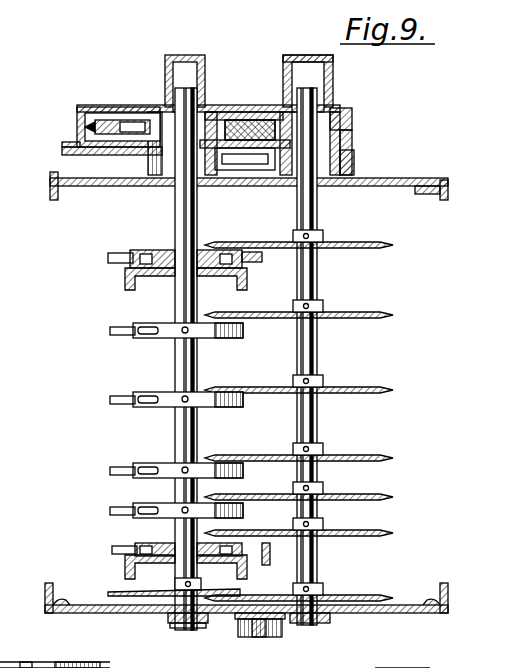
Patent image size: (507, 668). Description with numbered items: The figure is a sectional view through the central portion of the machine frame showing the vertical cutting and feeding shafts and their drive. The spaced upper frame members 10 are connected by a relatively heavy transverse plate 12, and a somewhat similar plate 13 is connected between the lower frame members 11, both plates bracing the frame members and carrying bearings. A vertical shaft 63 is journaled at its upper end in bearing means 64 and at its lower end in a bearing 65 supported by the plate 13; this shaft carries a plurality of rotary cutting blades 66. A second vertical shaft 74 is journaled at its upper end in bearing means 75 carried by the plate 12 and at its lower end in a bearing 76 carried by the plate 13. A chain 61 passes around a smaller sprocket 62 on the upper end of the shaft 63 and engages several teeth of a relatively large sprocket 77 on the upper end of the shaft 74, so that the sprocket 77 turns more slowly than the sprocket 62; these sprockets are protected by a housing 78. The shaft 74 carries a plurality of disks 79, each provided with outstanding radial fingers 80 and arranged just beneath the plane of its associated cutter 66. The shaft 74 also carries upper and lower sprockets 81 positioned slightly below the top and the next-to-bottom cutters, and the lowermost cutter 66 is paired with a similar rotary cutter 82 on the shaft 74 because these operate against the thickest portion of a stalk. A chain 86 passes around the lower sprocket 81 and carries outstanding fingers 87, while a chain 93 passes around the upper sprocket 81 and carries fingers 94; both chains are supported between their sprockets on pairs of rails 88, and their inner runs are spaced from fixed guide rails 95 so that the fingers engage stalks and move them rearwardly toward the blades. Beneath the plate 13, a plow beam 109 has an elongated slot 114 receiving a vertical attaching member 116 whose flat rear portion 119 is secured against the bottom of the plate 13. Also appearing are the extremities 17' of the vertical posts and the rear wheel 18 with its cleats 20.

The upper frame members 10 is at (54, 175).
The lower frame members 11 is at (45, 596).
The transverse plate 12 is at (405, 178).
The plate 13 is at (112, 614).
The extremities 17' is at (402, 658).
The wheel 18 is at (55, 654).
The cleats 20 is at (34, 662).
The chain 61 is at (343, 106).
The sprocket 62 is at (336, 108).
The vertical shaft 63 is at (318, 277).
The bearing means 64 is at (355, 160).
The bearing 65 is at (316, 624).
The rotary cutting blades 66 is at (392, 244).
The vertical shaft 74 is at (177, 210).
The bearing means 75 is at (148, 160).
The bearing 76 is at (190, 623).
The sprocket 77 is at (228, 125).
The housing 78 is at (77, 112).
The disks 79 is at (163, 339).
The radial fingers 80 is at (110, 330).
The sprockets 81 is at (207, 250).
The rotary cutter 82 is at (108, 593).
The chain 86 is at (143, 545).
The fingers 87 is at (116, 546).
The rails 88 is at (138, 280).
The chain 93 is at (145, 251).
The fingers 94 is at (112, 263).
The guide rails 95 is at (272, 268).
The plow beam 109 is at (236, 632).
The elongated slot 114 is at (268, 637).
The attaching member 116 is at (256, 637).
The flat rear portion 119 is at (200, 628).